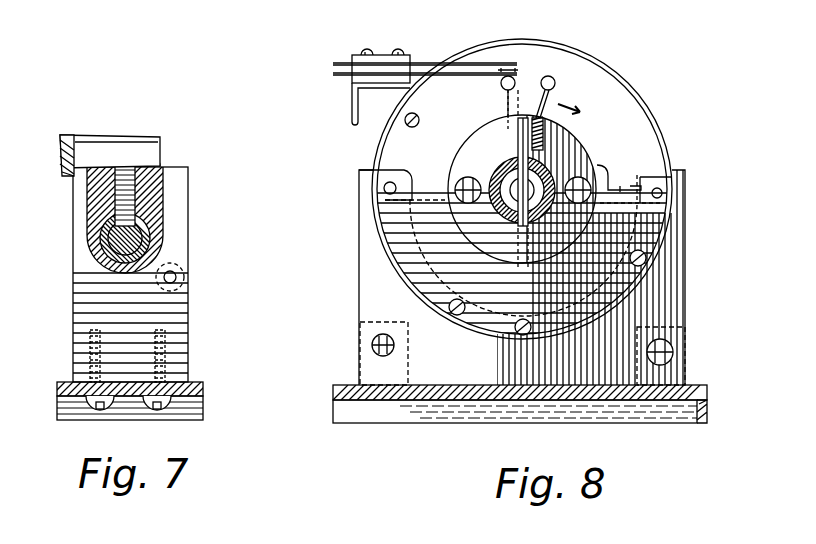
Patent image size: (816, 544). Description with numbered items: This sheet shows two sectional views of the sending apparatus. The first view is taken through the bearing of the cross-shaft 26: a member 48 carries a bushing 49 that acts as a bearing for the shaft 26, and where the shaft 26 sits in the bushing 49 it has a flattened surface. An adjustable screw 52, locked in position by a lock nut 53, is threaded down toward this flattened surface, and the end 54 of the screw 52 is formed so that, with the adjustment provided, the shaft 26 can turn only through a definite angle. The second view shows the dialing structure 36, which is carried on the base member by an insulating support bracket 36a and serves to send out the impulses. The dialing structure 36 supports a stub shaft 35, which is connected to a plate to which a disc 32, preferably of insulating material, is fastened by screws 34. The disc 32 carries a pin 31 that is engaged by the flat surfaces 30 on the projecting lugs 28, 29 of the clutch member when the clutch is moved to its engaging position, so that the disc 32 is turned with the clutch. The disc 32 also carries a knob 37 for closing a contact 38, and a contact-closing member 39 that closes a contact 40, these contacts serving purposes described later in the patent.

In FIG. 7, the cross-shaft 26 is at (104, 246).
In FIG. 7, the member 48 is at (188, 258).
In FIG. 7, the bushing 49 is at (132, 233).
In FIG. 7, the adjustable screw 52 is at (148, 183).
In FIG. 7, the lock nut 53 is at (142, 162).
In FIG. 7, the end of the screw 54 is at (160, 212).
In FIG. 8, the projecting lug 28 is at (584, 180).
In FIG. 8, the projecting lug 29 is at (490, 165).
In FIG. 8, the flat surface 30 is at (522, 165).
In FIG. 8, the pin 31 is at (510, 205).
In FIG. 8, the disc 32 is at (489, 168).
In FIG. 8, the screws 34 is at (456, 188).
In FIG. 8, the stub shaft 35 is at (556, 186).
In FIG. 8, the dialing structure 36 is at (672, 158).
In FIG. 8, the insulating support bracket 36a is at (442, 372).
In FIG. 8, the knob 37 is at (514, 112).
In FIG. 8, the contact 38 is at (520, 72).
In FIG. 8, the contact-closing member 39 is at (612, 183).
In FIG. 8, the contact 40 is at (656, 187).